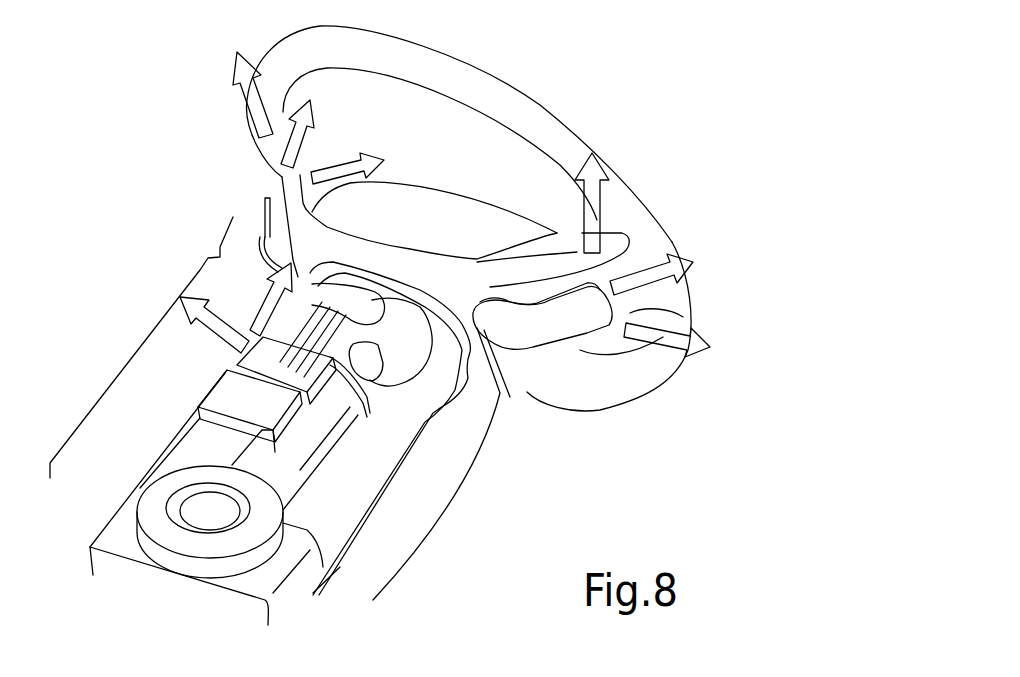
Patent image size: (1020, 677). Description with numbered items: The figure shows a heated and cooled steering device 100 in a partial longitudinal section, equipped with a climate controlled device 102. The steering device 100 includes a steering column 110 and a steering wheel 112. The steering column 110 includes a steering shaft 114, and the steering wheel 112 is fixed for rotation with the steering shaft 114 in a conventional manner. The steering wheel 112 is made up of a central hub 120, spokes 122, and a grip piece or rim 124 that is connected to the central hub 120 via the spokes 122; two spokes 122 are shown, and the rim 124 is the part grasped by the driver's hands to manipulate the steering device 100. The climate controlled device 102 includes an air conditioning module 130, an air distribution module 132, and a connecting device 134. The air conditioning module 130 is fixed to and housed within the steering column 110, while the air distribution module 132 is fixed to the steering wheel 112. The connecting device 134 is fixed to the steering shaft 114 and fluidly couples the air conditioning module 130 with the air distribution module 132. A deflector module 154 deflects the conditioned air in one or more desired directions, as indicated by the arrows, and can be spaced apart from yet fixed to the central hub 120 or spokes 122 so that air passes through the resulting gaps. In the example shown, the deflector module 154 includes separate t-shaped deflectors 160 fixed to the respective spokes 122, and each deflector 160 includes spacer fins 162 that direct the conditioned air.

The steering device 100 is at (413, 325).
The climate controlled device 102 is at (413, 325).
The steering column 110 is at (451, 388).
The steering wheel 112 is at (652, 330).
The steering shaft 114 is at (390, 425).
The central hub 120 is at (428, 188).
The spokes 122 is at (441, 177).
The rim 124 is at (459, 134).
The air conditioning module 130 is at (213, 481).
The air distribution module 132 is at (160, 336).
The connecting device 134 is at (452, 377).
The deflector module 154 is at (583, 366).
The t-shaped deflectors 160 is at (244, 264).
The spacer fins 162 is at (445, 204).